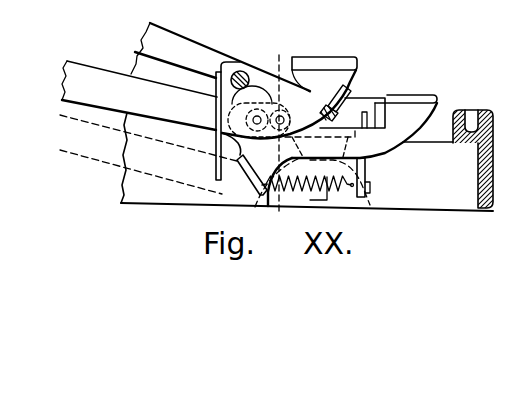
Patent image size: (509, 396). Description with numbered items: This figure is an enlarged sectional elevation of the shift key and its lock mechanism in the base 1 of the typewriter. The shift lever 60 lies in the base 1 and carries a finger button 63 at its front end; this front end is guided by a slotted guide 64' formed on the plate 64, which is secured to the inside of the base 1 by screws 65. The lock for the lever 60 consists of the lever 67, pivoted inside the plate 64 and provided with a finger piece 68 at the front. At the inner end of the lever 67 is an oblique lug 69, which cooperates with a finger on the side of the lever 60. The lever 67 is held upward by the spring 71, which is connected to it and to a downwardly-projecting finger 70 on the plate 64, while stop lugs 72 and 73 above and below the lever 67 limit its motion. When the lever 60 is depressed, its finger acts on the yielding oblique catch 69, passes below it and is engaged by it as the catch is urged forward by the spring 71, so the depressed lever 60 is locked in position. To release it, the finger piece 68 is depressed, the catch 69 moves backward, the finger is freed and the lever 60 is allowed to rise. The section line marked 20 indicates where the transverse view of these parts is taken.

The lever 60 is at (74, 79).
The slotted guide 64' is at (200, 117).
The plate 64 is at (288, 97).
The screws 65 is at (241, 71).
The finger button 63 is at (326, 67).
The center line 20 is at (286, 62).
The stop lug 73 is at (376, 98).
The finger piece 68 is at (379, 132).
The lever 67 is at (456, 111).
The base 1 is at (473, 199).
The oblique lug 69 is at (247, 183).
The spring 71 is at (335, 158).
The downwardly-projecting finger 70 is at (357, 197).
The stop lug 72 is at (370, 194).